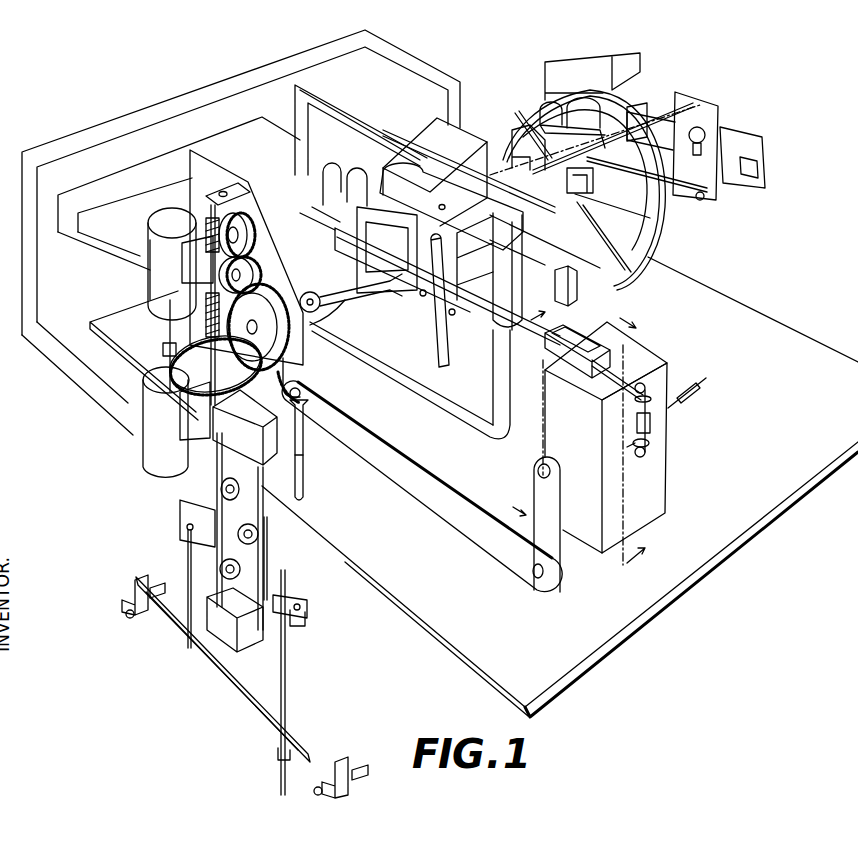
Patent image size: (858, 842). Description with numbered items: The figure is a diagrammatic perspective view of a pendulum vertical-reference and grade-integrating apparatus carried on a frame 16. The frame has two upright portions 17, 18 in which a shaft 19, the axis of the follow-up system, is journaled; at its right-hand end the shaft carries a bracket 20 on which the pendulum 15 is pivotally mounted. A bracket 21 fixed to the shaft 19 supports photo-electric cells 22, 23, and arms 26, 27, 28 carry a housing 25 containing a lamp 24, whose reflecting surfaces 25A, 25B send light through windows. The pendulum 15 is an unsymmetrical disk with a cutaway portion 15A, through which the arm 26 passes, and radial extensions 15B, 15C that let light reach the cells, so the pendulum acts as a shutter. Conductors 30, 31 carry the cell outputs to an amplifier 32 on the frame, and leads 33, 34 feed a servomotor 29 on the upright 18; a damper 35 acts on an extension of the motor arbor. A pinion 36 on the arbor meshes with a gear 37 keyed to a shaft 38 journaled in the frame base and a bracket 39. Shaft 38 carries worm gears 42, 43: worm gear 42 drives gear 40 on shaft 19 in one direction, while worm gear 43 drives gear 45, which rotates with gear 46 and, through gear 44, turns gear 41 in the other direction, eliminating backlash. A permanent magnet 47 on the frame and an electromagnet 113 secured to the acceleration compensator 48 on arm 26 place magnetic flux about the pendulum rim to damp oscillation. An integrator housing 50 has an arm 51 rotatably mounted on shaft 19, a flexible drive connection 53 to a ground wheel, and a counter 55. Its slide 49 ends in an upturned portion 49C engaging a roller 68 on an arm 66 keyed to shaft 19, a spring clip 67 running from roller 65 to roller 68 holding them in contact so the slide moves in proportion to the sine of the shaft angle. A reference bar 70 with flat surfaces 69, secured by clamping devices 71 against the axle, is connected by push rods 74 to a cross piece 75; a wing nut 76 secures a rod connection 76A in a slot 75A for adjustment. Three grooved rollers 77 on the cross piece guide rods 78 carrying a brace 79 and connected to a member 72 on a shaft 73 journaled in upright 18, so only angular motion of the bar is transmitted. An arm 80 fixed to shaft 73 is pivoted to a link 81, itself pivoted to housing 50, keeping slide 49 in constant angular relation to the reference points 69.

The pendulum 15 is at (605, 120).
The cutaway portion 15A is at (543, 118).
The radial extension 15B is at (668, 235).
The radial extension 15C is at (522, 150).
The frame 16 is at (730, 306).
The upright portion 17 is at (447, 338).
The upright portion 18 is at (303, 478).
The shaft 19 is at (302, 338).
The bracket 20 is at (593, 172).
The bracket 21 is at (432, 205).
The photo-electric cell 22 is at (410, 165).
The photo-electric cell 23 is at (503, 290).
The lamp 24 is at (705, 133).
The housing 25 is at (712, 108).
The reflecting surface 25A is at (765, 145).
The reflecting surface 25B is at (645, 110).
The support arm 26 is at (688, 105).
The arm 27 is at (688, 196).
The arm 28 is at (700, 200).
The servomotor 29 is at (157, 220).
The conductor 30 is at (350, 122).
The conductor 31 is at (322, 100).
The amplifier 32 is at (430, 135).
The lead 33 is at (80, 190).
The lead 34 is at (145, 185).
The damper 35 is at (146, 438).
The pinion 36 is at (168, 345).
The gear 37 is at (157, 365).
The shaft 38 is at (228, 352).
The bracket 39 is at (218, 190).
The gear member 40 is at (305, 373).
The gear member 41 is at (262, 375).
The worm gear 42 is at (147, 295).
The worm gear 43 is at (147, 283).
The gear 44 is at (307, 292).
The gear 45 is at (242, 193).
The gear 46 is at (238, 212).
The permanent magnet 47 is at (600, 296).
The compensator 48 is at (548, 75).
The slide 49 is at (494, 352).
The upturned portion 49C is at (345, 243).
The integrator housing 50 is at (655, 487).
The arm 51 is at (405, 380).
The flexible drive connection 53 is at (703, 378).
The counter 55 is at (600, 338).
The roller 65 is at (382, 212).
The arm 66 is at (373, 340).
The spring clip 67 is at (358, 188).
The roller 68 is at (327, 172).
The flat surfaces 69 is at (135, 603).
The reference bar 70 is at (215, 700).
The clamping devices 71 is at (140, 580).
The member 72 is at (227, 425).
The shaft 73 is at (303, 455).
The push rods 74 is at (191, 642).
The cross piece 75 is at (290, 600).
The slot 75A is at (272, 595).
The wing nut 76 is at (306, 614).
The rod connection 76A is at (300, 605).
The rollers 77 is at (258, 536).
The rods 78 is at (243, 650).
The brace 79 is at (227, 623).
The arm 80 is at (408, 485).
The link 81 is at (558, 505).
The electromagnet 113 is at (533, 140).